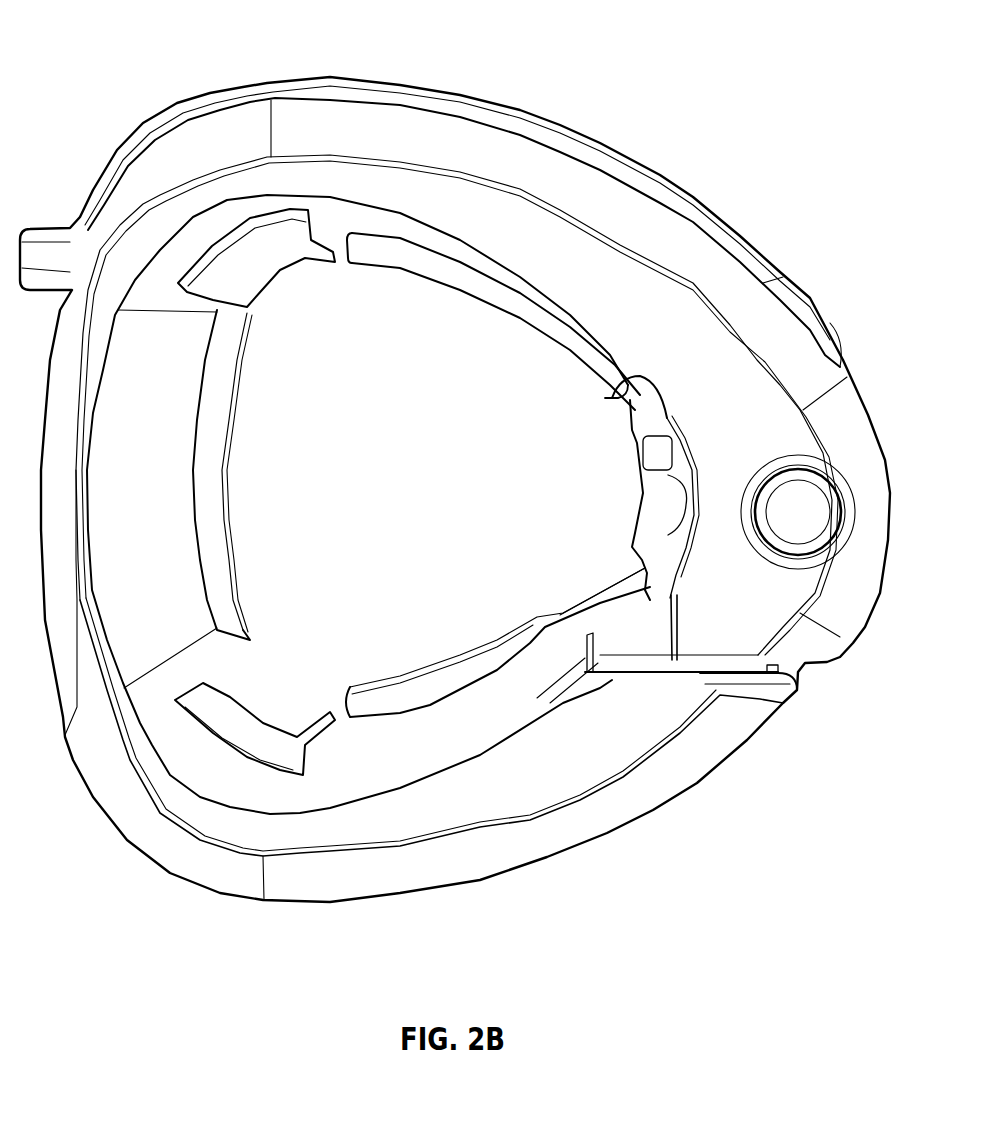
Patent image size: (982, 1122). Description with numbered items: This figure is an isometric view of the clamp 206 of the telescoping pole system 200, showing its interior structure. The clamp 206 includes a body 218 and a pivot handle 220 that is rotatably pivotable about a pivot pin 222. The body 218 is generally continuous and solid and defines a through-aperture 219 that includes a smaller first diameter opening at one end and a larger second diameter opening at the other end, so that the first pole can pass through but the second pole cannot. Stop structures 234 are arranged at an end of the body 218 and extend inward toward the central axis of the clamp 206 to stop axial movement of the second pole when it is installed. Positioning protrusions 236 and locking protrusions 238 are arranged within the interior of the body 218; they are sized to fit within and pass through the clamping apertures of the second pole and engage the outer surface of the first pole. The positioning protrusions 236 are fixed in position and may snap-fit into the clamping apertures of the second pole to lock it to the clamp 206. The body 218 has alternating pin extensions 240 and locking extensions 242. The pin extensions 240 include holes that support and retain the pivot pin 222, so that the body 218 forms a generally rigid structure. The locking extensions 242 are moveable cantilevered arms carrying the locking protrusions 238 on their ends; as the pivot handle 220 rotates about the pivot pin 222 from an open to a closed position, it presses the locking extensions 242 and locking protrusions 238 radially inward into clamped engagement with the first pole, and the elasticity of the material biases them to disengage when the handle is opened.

The telescoping pole system 200 is at (108, 38).
The clamp 206 is at (651, 810).
The body 218 is at (487, 865).
The through-aperture 219 is at (431, 487).
The pivot handle 220 is at (693, 197).
The pivot pin 222 is at (806, 510).
The stop structures 234 is at (477, 290).
The positioning protrusions 236 is at (268, 265).
The locking protrusions 238 is at (658, 472).
The pin extensions 240 is at (627, 587).
The locking extensions 242 is at (608, 618).